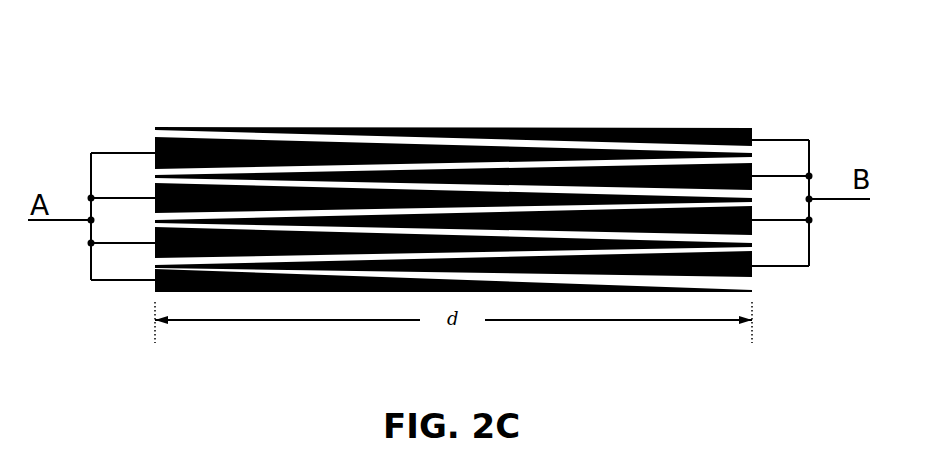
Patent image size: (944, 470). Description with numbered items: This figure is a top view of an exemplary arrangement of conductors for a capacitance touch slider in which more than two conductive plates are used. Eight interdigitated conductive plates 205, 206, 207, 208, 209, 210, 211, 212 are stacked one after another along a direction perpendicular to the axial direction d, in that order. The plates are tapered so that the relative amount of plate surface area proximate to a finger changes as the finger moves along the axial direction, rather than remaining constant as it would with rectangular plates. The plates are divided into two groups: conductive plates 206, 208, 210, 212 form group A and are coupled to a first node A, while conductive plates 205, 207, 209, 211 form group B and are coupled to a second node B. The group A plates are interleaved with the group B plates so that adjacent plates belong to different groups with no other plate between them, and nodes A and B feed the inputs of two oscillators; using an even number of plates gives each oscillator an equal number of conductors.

The conductive plate 205 is at (603, 128).
The conductive plate 206 is at (155, 145).
The conductive plate 207 is at (752, 165).
The conductive plate 208 is at (155, 181).
The conductive plate 209 is at (752, 230).
The conductive plate 210 is at (157, 257).
The conductive plate 211 is at (752, 276).
The conductive plate 212 is at (222, 291).